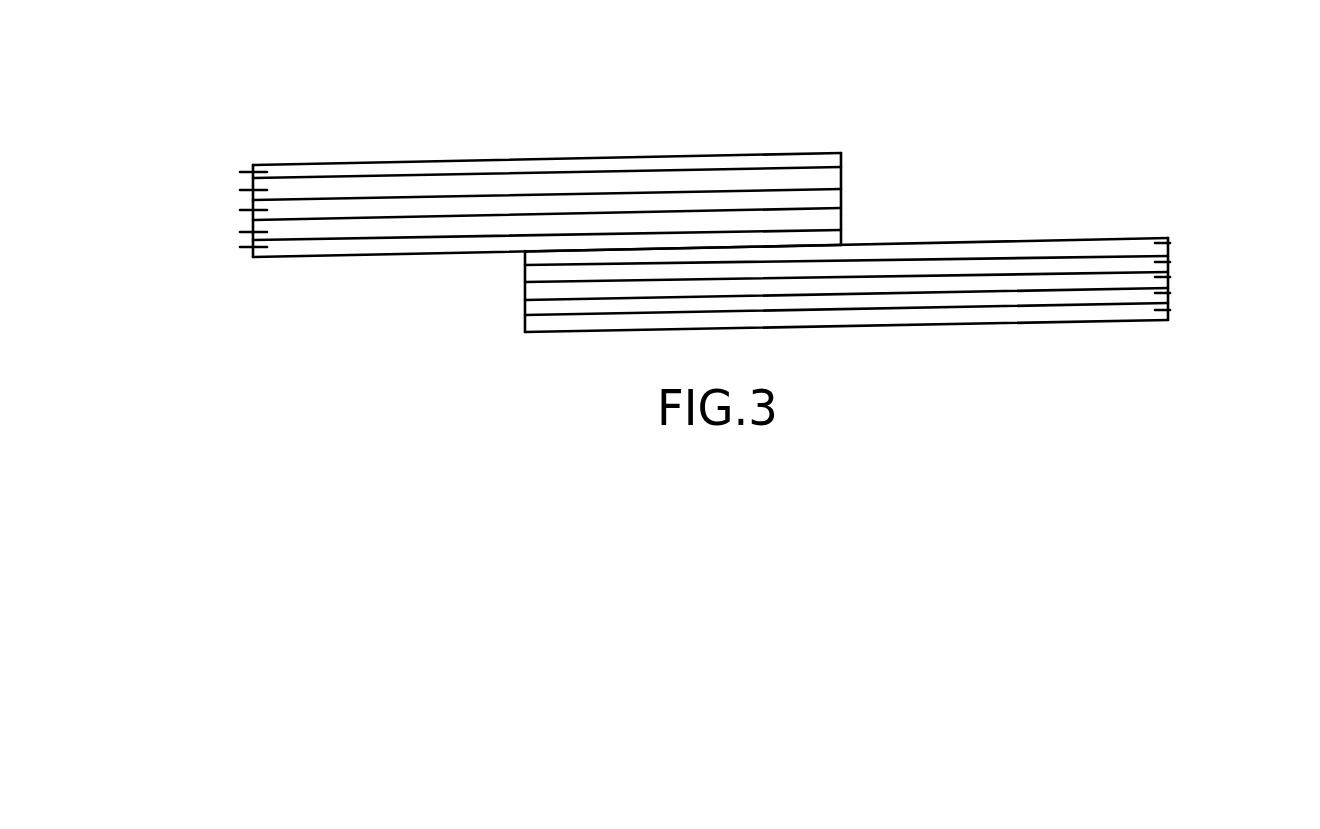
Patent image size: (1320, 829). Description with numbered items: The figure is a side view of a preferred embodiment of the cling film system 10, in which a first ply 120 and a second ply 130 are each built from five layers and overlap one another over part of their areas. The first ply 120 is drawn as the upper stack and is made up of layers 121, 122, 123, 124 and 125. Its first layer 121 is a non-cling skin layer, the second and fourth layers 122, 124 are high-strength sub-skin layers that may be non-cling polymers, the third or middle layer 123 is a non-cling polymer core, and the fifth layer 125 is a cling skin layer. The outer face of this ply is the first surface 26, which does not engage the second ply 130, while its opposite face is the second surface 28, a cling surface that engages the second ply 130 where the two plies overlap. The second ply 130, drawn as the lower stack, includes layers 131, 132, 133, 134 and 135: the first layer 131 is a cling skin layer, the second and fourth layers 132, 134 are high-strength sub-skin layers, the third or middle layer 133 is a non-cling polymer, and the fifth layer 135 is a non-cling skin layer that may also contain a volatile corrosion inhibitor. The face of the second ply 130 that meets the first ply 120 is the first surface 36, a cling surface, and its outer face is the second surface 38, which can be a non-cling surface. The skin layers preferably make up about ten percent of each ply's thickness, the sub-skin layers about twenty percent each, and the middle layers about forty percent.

The cling film system 10 is at (700, 258).
The first surface 26 is at (390, 163).
The second surface 28 is at (372, 253).
The first surface 36 is at (983, 240).
The second surface 38 is at (965, 325).
The first ply 120 is at (250, 165).
The first layer 121 is at (253, 172).
The second layer 122 is at (253, 190).
The third layer 123 is at (253, 212).
The fourth layer 124 is at (253, 232).
The fifth layer 125 is at (253, 247).
The second ply 130 is at (1168, 320).
The first layer 131 is at (1170, 243).
The second layer 132 is at (1170, 262).
The third layer 133 is at (1170, 277).
The fourth layer 134 is at (1170, 293).
The fifth layer 135 is at (1170, 310).